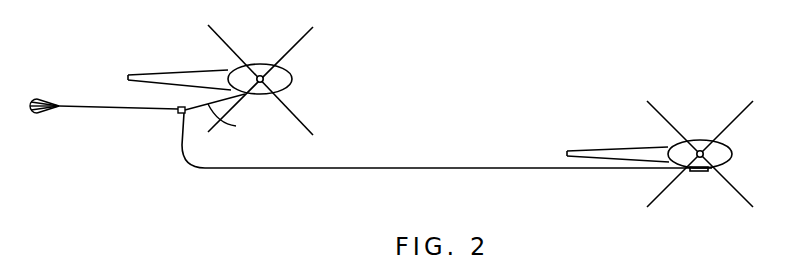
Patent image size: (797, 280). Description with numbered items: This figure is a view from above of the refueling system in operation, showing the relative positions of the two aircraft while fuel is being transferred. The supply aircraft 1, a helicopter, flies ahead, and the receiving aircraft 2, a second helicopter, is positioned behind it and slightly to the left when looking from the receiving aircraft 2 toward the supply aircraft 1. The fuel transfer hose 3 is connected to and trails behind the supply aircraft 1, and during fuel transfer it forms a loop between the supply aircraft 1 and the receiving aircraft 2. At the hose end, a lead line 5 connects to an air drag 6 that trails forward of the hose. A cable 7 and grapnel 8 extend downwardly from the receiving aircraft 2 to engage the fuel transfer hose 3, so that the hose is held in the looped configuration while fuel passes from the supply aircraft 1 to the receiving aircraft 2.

The supply aircraft 1 is at (700, 141).
The receiving aircraft 2 is at (262, 64).
The fuel transfer hose 3 is at (503, 167).
The lead line 5 is at (107, 103).
The air drag 6 is at (32, 98).
The cable 7 is at (236, 126).
The grapnel 8 is at (178, 113).